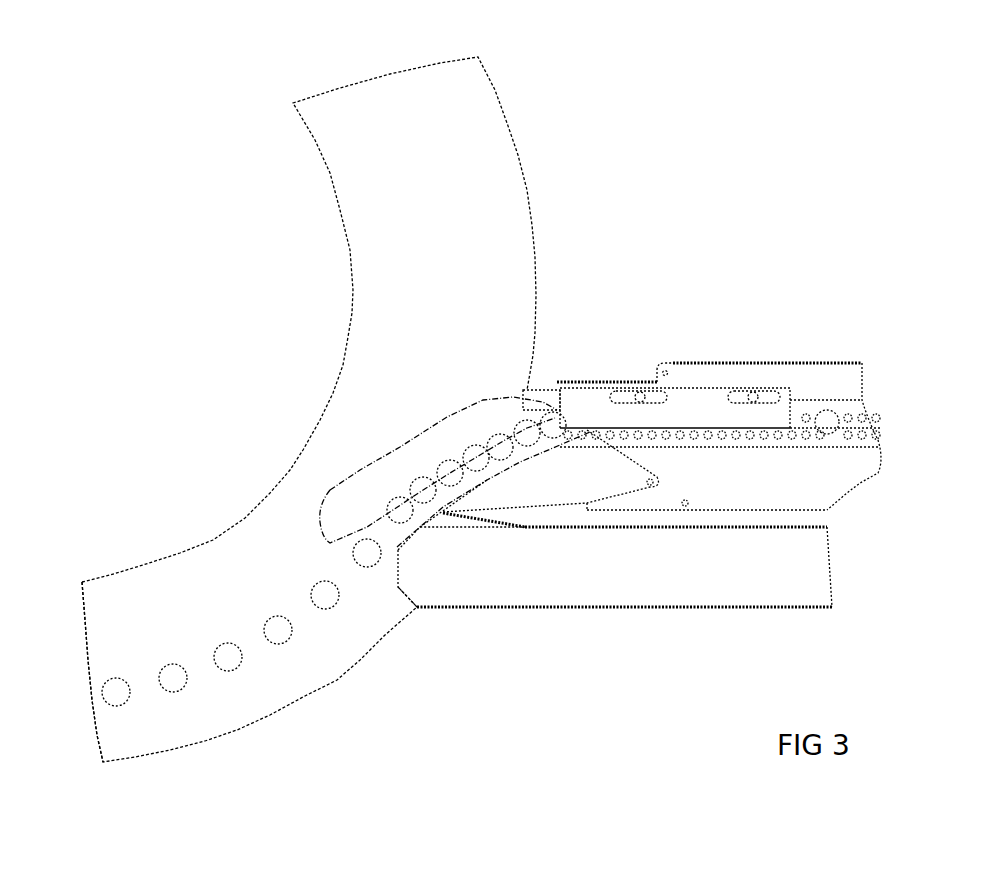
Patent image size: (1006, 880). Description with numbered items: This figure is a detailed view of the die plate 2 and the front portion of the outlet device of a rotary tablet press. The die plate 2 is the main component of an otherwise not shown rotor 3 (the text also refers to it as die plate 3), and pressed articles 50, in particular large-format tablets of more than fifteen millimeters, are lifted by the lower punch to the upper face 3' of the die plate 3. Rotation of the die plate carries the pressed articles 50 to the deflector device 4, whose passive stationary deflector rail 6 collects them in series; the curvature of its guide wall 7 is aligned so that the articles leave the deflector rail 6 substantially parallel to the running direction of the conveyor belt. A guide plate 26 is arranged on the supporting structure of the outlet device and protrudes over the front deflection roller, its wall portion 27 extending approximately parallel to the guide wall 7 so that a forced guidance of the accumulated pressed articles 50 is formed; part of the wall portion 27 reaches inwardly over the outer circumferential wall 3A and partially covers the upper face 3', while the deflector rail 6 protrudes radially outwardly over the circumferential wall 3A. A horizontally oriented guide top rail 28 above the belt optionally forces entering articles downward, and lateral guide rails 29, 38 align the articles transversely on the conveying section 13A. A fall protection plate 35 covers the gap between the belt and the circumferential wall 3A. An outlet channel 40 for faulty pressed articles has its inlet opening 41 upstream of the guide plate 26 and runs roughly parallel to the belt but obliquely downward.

The die plate 2 is at (280, 355).
The rotor 3 is at (309, 409).
The upper face of the die plate 3' is at (119, 593).
The outer circumferential wall of the die plate 3A is at (403, 620).
The deflector device 4 is at (366, 400).
The deflector rail 6 is at (455, 430).
The guide wall of the deflector rail 7 is at (552, 408).
The conveying section of the conveyor belt 13A is at (867, 418).
The guide plate 26 is at (547, 483).
The wall portion 27 is at (485, 480).
The guide top rail 28 is at (705, 400).
The lateral guide rail 29 is at (823, 387).
The fall protection plate 35 is at (520, 480).
The lateral guide rail 38 is at (772, 473).
The outlet channel 40 is at (670, 558).
The inlet opening of the outlet channel 41 is at (392, 590).
The pressed articles 50 is at (502, 440).